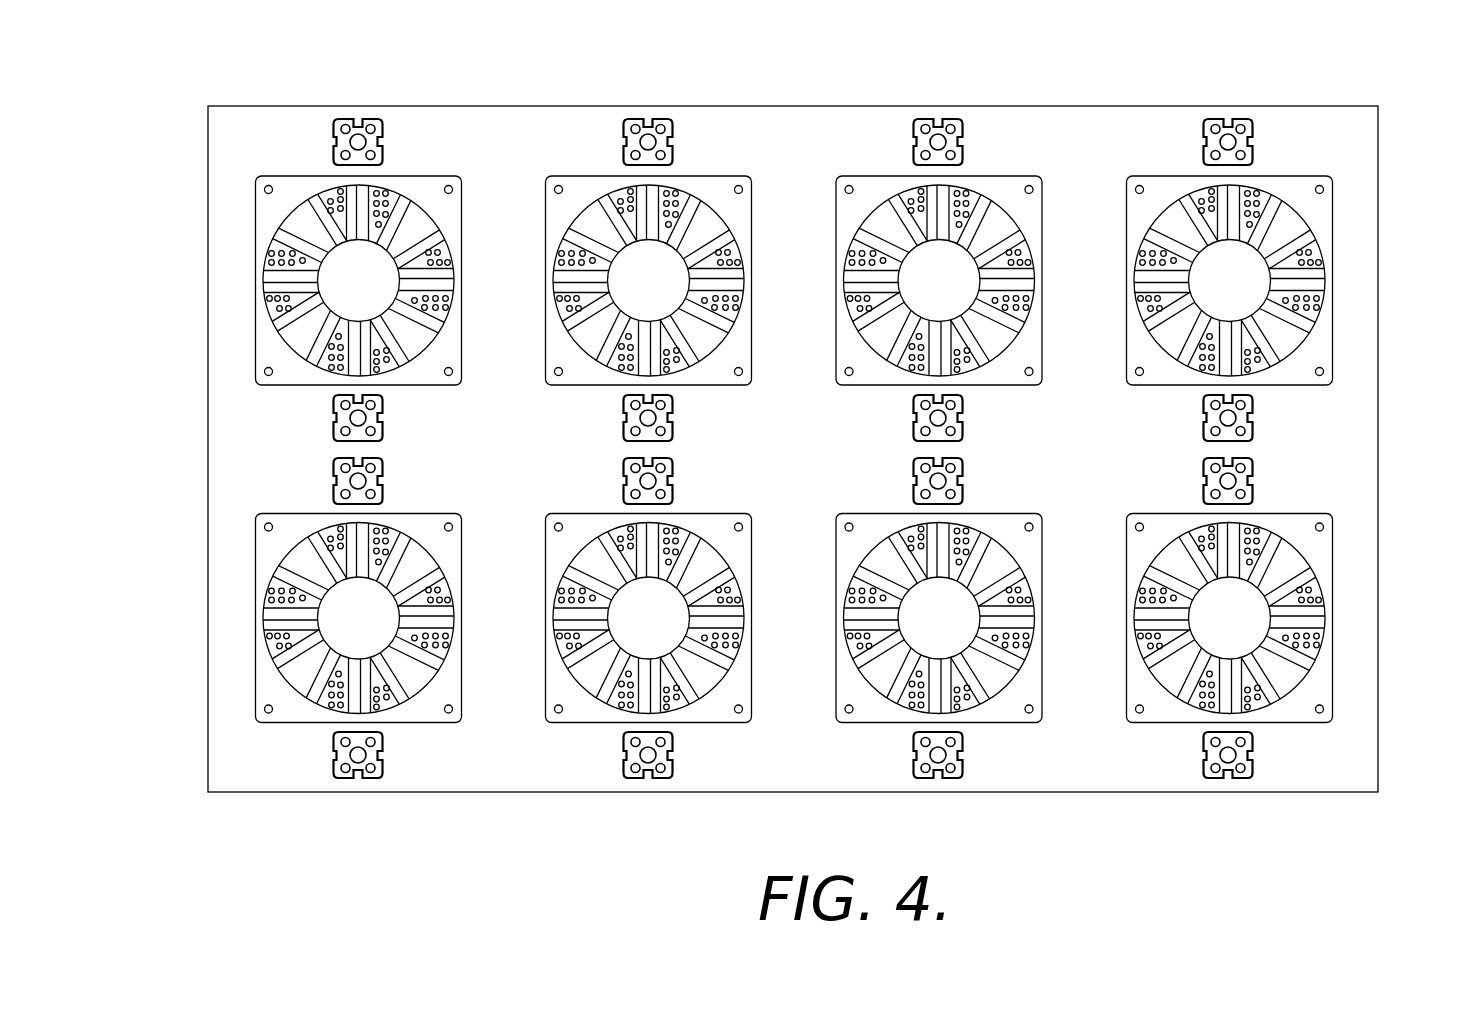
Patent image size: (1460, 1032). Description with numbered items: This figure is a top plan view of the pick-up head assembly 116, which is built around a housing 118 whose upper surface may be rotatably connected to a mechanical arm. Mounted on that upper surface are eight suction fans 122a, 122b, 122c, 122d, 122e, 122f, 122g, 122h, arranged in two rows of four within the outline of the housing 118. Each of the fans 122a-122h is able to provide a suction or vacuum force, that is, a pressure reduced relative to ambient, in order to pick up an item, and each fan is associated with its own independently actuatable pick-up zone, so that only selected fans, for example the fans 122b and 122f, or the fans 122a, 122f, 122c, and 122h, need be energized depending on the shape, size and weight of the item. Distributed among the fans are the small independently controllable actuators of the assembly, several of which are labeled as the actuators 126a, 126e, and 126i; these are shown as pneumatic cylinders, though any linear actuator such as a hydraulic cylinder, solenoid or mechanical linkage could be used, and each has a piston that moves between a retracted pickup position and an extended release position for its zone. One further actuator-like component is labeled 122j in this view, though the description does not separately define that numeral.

The pick-up head assembly 116 is at (762, 451).
The housing 118 is at (1357, 107).
The suction fan 122a is at (256, 206).
The suction fan 122b is at (724, 177).
The suction fan 122c is at (1002, 177).
The suction fan 122d is at (1297, 177).
The suction fan 122e is at (293, 726).
The suction fan 122f is at (723, 726).
The suction fan 122g is at (1000, 726).
The suction fan 122h is at (1298, 726).
The connector 122j is at (367, 780).
The actuator 126a is at (364, 117).
The actuator 126e is at (331, 410).
The actuator 126i is at (331, 483).